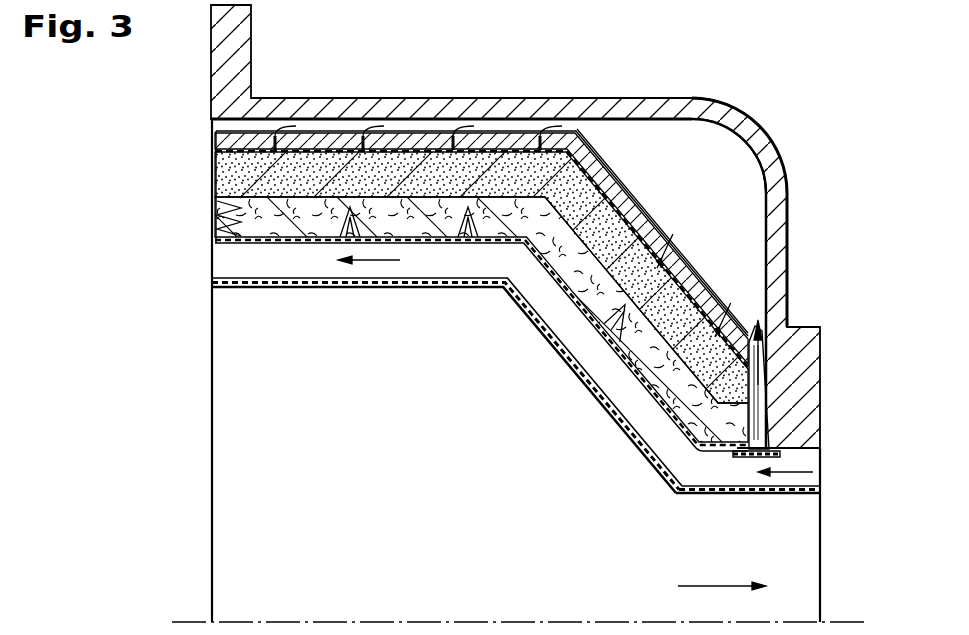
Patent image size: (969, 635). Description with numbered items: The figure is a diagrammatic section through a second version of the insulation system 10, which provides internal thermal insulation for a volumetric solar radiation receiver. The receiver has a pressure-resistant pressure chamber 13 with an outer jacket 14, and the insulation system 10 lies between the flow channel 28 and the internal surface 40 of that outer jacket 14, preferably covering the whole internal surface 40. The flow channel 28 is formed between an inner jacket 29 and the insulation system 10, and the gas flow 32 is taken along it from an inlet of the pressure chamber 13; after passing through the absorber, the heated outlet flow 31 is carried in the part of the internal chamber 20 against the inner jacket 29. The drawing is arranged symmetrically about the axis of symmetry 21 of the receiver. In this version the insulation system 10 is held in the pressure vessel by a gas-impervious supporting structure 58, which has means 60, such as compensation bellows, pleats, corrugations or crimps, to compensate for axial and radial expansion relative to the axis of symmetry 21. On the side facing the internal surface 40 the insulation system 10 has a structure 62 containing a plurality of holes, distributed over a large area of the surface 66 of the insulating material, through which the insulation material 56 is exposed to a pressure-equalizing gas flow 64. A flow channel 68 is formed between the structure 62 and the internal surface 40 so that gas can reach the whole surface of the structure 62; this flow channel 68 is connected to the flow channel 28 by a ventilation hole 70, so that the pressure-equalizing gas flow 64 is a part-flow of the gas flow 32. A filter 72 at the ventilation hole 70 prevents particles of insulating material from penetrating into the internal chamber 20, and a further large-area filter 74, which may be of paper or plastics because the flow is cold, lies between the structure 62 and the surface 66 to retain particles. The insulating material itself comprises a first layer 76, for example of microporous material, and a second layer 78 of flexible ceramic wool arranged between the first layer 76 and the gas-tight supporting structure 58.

The insulation system 10 is at (410, 160).
The pressure chamber 13 is at (674, 89).
The outer jacket 14 is at (503, 100).
The internal chamber 20 is at (381, 499).
The axis of symmetry 21 is at (840, 622).
The flow channel 28 is at (803, 480).
The inner jacket 29 is at (743, 495).
The outlet flow 31 is at (692, 586).
The gas flow 32 is at (377, 260).
The internal surface 40 is at (630, 60).
The insulation material 56 is at (206, 157).
The supporting structure 58 is at (253, 242).
The means to compensate for axial and radial expansion 60 is at (568, 350).
The structure 62 is at (331, 140).
The pressure-equalizing gas flow 64 is at (294, 126).
The surface of the insulating material 66 is at (215, 150).
The flow channel 68 is at (470, 124).
The ventilation hole 70 is at (763, 352).
The filter 72 is at (778, 458).
The filter 74 is at (702, 297).
The first layer 76 is at (240, 178).
The second layer 78 is at (245, 231).